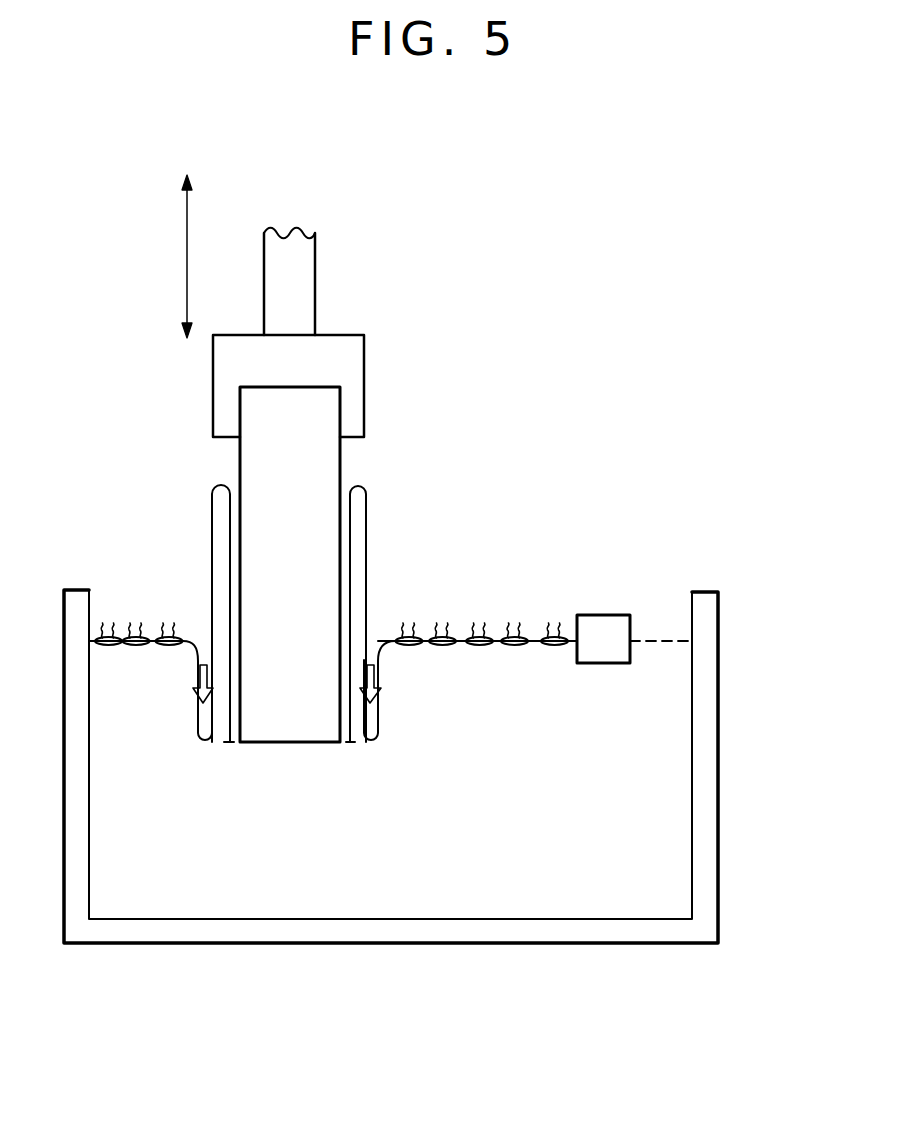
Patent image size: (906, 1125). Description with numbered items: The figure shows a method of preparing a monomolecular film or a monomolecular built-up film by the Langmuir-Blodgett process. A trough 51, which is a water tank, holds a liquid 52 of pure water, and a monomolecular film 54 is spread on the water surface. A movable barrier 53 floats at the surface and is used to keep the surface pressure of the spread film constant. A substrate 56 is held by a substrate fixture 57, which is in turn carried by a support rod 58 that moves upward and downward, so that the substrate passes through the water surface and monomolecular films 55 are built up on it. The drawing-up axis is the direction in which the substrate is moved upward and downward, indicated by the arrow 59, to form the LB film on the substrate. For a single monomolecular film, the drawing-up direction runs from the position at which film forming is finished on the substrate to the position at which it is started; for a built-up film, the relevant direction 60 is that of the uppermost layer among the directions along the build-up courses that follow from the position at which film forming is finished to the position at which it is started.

The trough 51 is at (713, 667).
The liquid 52 is at (680, 772).
The movable barrier 53 is at (610, 620).
The monomolecular film 54 is at (450, 636).
The monomolecular films built up on the substrate 55 is at (368, 517).
The substrate 56 is at (330, 455).
The substrate fixture 57 is at (355, 361).
The support rod 58 is at (305, 293).
The drawing-up axis direction 59 is at (189, 231).
The direction of an uppermost layer of built-up films 60 is at (380, 686).